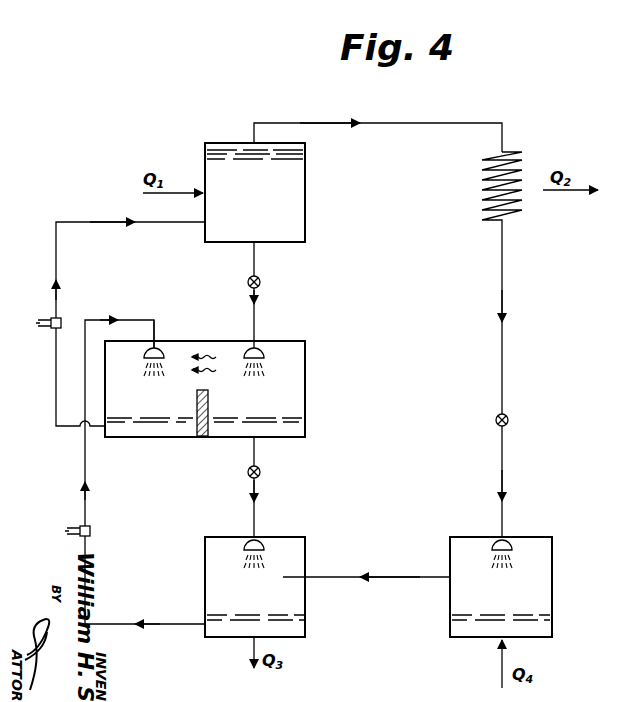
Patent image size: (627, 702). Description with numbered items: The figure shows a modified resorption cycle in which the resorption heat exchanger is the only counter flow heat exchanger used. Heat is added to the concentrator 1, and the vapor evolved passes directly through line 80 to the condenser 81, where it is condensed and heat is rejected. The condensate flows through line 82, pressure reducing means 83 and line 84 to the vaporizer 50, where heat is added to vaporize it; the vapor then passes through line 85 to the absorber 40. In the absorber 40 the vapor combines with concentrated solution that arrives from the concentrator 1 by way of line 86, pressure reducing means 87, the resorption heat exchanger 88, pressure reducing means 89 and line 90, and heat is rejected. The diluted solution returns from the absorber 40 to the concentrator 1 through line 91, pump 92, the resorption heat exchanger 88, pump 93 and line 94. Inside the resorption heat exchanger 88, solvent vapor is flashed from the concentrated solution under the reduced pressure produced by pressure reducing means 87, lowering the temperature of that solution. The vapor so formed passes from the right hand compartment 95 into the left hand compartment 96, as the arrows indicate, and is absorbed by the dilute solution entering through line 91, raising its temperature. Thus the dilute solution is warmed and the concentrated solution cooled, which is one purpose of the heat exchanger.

The concentrator 1 is at (308, 200).
The line 80 is at (420, 123).
The condenser 81 is at (482, 210).
The line 82 is at (500, 283).
The pressure reducing means 83 is at (495, 420).
The line 84 is at (500, 470).
The vaporizer 50 is at (450, 542).
The line 85 is at (380, 577).
The absorber 40 is at (205, 583).
The line 86 is at (253, 262).
The pressure reducing means 87 is at (261, 282).
The resorption heat exchanger 88 is at (305, 378).
The pressure reducing means 89 is at (261, 472).
The line 90 is at (258, 512).
The line 91 is at (88, 575).
The pump 92 is at (92, 530).
The pump 93 is at (62, 319).
The line 94 is at (100, 222).
The right hand compartment 95 is at (257, 376).
The left hand compartment 96 is at (157, 365).